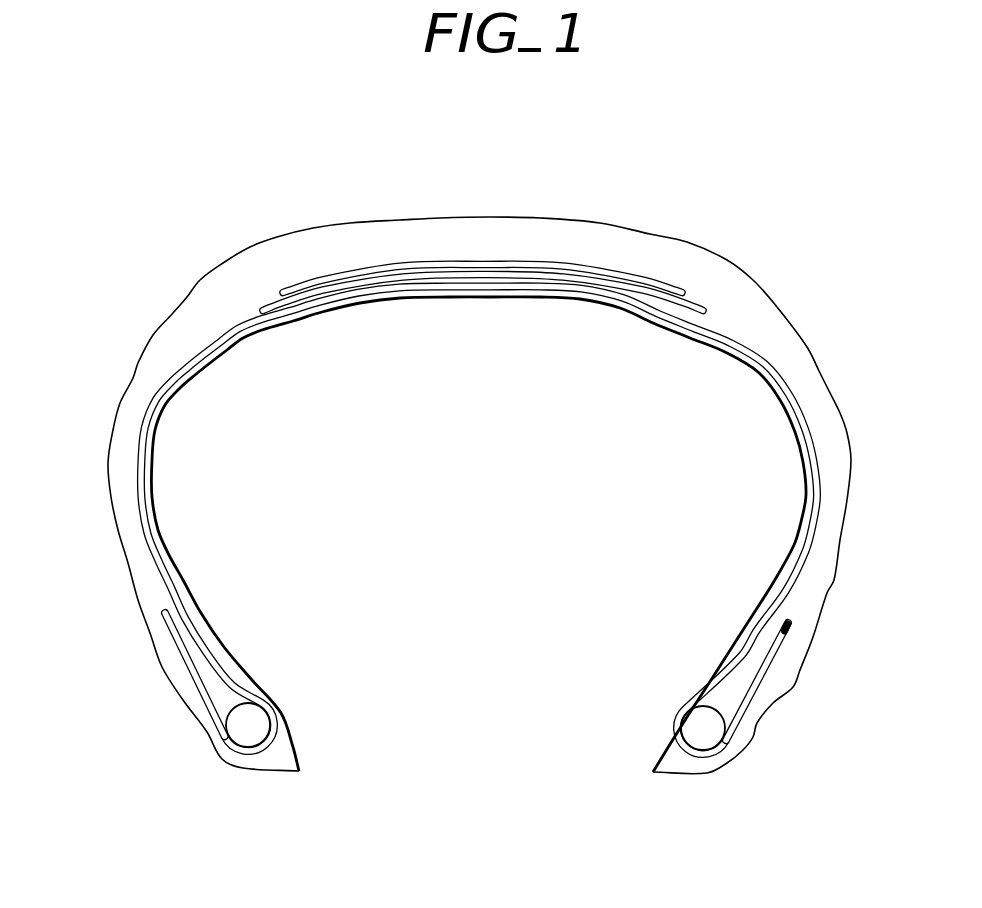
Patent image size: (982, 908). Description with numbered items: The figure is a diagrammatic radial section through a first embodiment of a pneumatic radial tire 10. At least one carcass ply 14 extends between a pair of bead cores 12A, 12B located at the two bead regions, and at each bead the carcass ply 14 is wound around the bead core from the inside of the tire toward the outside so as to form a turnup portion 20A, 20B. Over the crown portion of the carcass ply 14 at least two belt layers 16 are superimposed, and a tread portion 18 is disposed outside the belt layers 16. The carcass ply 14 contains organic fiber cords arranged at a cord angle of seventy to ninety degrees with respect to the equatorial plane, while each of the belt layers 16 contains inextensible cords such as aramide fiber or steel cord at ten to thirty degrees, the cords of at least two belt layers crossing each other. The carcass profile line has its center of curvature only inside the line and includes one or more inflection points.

The pneumatic radial tire 10 is at (576, 214).
The bead core 12A is at (698, 724).
The bead core 12B is at (257, 720).
The carcass ply 14 is at (748, 350).
The belt layers 16 is at (670, 287).
The tread portion 18 is at (434, 218).
The turnup portion 20A is at (780, 653).
The turnup portion 20B is at (175, 650).